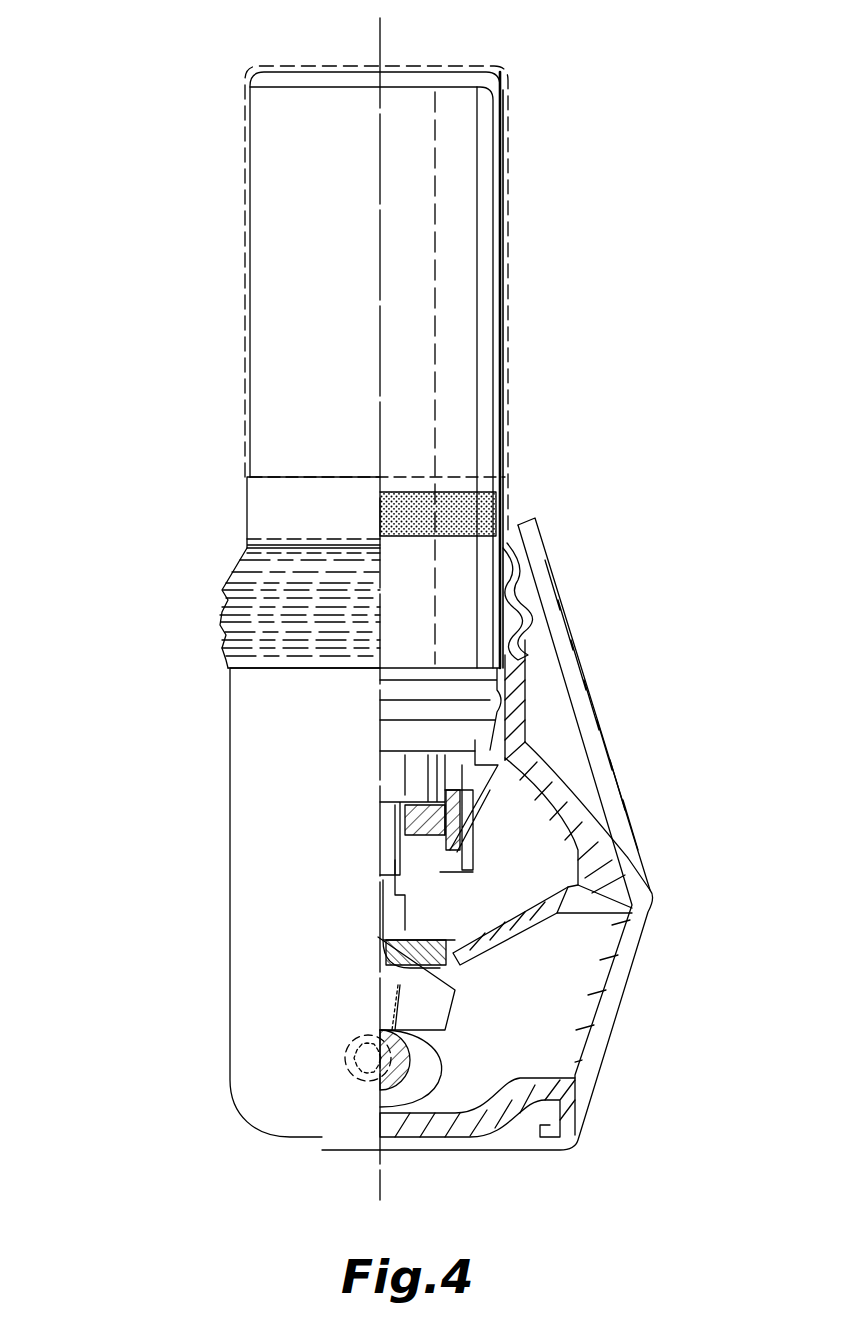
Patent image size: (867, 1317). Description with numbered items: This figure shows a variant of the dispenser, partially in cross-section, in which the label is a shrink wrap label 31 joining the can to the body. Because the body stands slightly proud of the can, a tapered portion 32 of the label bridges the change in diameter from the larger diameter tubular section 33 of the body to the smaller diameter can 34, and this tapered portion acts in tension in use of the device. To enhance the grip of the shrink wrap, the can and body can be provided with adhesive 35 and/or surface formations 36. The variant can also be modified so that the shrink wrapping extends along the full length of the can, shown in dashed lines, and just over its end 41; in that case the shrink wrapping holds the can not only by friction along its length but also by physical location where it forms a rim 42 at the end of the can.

The shrink wrap label 31 is at (295, 507).
The tapered portion 32 is at (237, 563).
The tubular section 33 is at (305, 698).
The can 34 is at (513, 352).
The adhesive 35 is at (445, 507).
The surface formations 36 is at (525, 646).
The end of the can 41 is at (403, 62).
The rim 42 is at (288, 62).